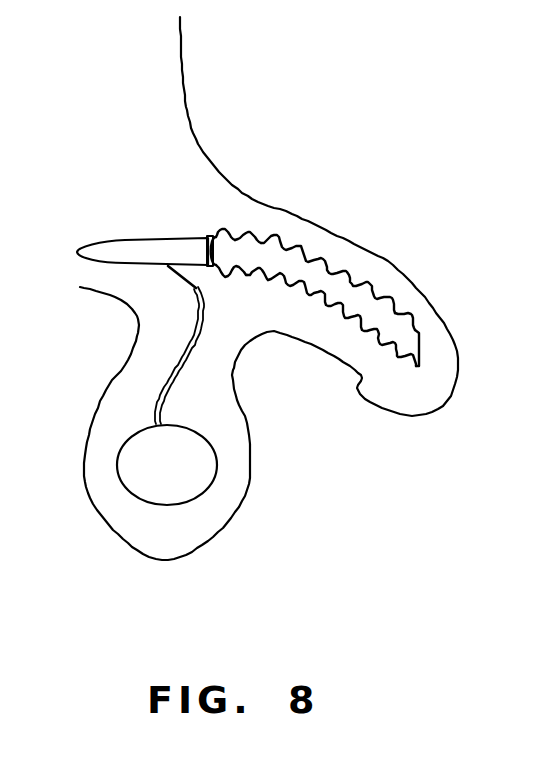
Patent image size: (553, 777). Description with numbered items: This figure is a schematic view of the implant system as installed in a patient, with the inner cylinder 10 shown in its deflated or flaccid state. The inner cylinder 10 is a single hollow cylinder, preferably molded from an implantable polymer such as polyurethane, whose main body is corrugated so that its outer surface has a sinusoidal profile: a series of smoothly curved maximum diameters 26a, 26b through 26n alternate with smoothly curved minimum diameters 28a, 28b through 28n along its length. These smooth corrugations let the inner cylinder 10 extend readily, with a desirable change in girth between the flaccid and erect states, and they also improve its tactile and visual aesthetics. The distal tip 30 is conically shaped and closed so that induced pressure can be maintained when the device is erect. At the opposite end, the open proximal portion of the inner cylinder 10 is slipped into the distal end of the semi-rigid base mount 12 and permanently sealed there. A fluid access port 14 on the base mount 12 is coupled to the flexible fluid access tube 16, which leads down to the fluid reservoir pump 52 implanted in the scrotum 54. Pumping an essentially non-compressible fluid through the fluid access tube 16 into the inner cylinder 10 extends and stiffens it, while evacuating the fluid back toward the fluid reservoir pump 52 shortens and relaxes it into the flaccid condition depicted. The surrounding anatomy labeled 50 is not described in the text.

The inner cylinder 10 is at (372, 280).
The base mount 12 is at (172, 248).
The fluid access port 14 is at (177, 280).
The fluid access tube 16 is at (160, 387).
The maximum diameter 26a is at (228, 228).
The maximum diameter 26b is at (253, 232).
The maximum diameter 26n is at (408, 333).
The minimum diameter 28a is at (235, 267).
The minimum diameter 28b is at (258, 270).
The minimum diameter 28n is at (378, 345).
The distal tip 30 is at (381, 357).
The penis (corpus cavernosum) 50 is at (380, 268).
The fluid reservoir pump 52 is at (152, 468).
The scrotum 54 is at (210, 525).